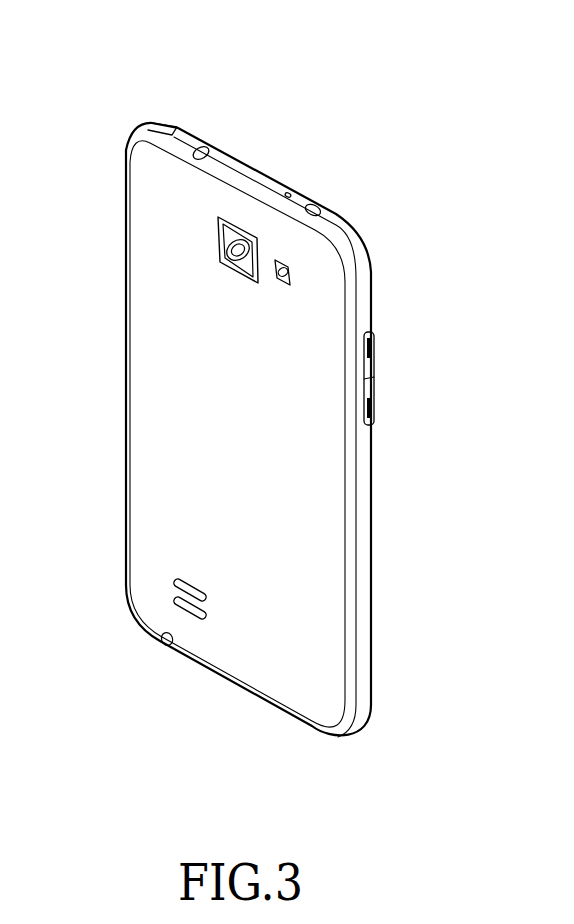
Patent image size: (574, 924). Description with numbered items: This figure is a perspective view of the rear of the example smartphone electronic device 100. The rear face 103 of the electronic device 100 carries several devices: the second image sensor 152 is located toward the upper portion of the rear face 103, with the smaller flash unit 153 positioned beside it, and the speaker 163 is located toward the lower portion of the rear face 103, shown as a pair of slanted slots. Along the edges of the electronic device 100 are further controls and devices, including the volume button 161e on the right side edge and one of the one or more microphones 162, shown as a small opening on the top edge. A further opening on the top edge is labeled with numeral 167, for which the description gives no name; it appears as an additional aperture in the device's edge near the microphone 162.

The electronic device 100 is at (130, 94).
The rear face 103 is at (152, 413).
The second image sensor 152 is at (217, 241).
The flash unit 153 is at (293, 278).
The volume button 161e is at (390, 330).
The microphone 162 is at (291, 191).
The speaker 163 is at (177, 580).
The interface hole 167 is at (203, 148).